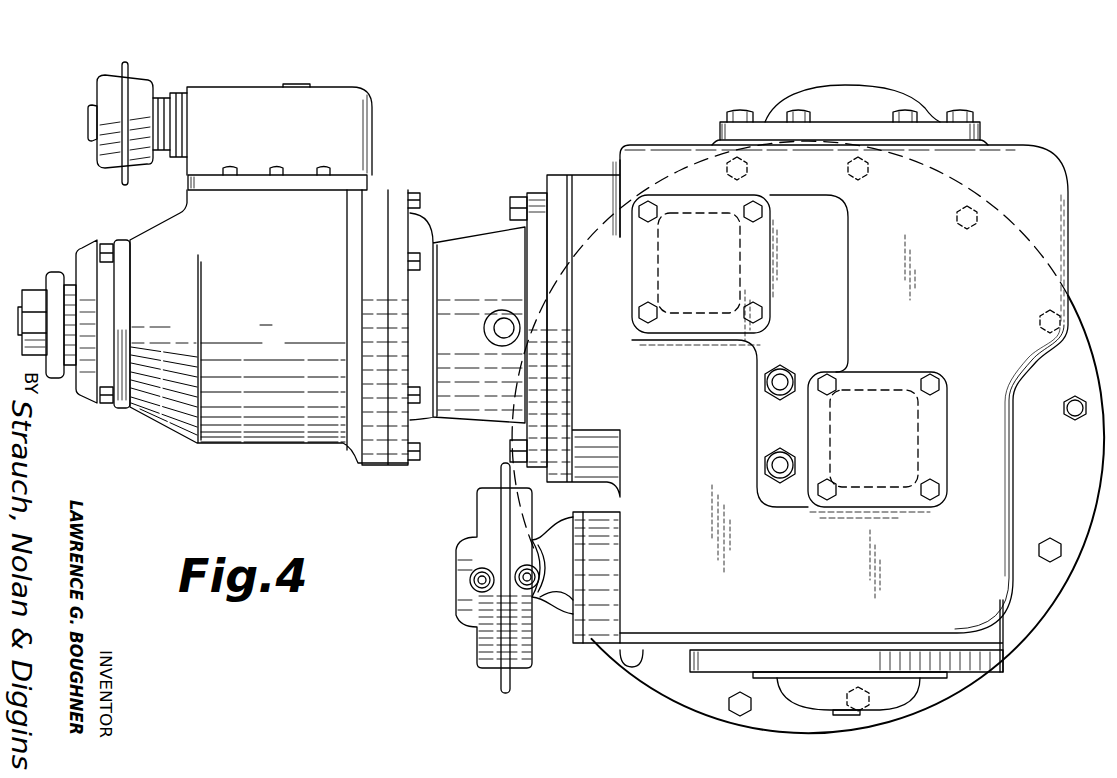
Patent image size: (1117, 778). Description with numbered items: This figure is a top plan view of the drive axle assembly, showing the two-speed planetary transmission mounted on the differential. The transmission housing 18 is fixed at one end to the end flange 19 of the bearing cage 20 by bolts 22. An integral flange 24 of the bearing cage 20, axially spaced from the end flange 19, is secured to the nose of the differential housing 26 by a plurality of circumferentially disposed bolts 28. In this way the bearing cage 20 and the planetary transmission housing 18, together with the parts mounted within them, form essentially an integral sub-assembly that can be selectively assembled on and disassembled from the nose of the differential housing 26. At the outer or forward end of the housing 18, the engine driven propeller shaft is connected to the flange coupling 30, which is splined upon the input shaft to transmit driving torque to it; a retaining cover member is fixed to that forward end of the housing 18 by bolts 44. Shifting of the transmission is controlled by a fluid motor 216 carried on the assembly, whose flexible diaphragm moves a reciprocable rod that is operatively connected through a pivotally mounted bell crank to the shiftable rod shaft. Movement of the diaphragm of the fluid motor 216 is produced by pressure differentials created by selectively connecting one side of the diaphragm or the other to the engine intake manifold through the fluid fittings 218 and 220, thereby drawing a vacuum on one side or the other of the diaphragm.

The housing 18 is at (273, 432).
The end flange 19 is at (398, 466).
The bearing cage 20 is at (452, 243).
The bolts 22 is at (416, 392).
The integral flange 24 is at (535, 196).
The differential housing 26 is at (620, 166).
The bolts 28 is at (511, 209).
The flange coupling 30 is at (53, 278).
The bolts 44 is at (108, 244).
The fluid motor 216 is at (482, 633).
The fluid fitting 218 is at (478, 580).
The fluid fitting 220 is at (530, 582).